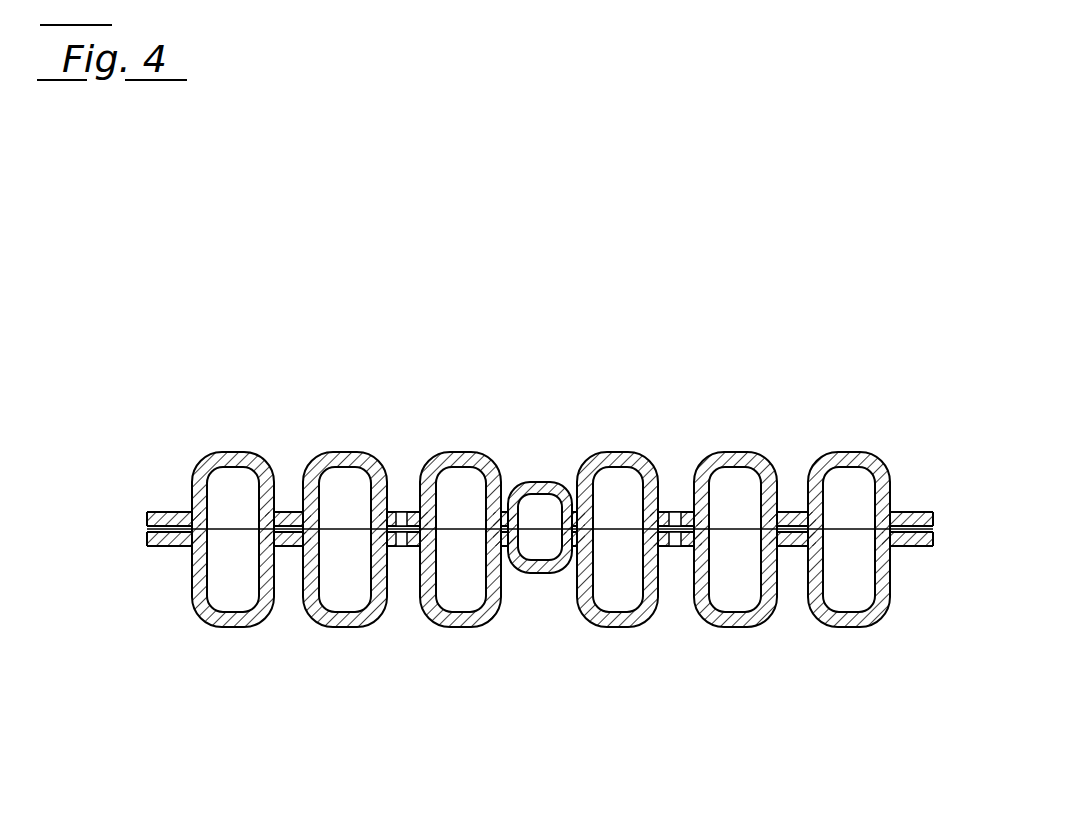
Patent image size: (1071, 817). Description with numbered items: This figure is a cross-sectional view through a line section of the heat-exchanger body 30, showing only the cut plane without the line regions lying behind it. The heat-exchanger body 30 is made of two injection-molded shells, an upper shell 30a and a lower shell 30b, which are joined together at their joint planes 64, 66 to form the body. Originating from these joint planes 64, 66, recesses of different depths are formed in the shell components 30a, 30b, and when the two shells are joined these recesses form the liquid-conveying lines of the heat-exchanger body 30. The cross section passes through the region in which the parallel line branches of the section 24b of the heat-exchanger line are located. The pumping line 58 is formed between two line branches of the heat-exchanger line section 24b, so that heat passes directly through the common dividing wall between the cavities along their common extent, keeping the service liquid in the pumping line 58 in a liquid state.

The heat-exchanger body 30 is at (494, 568).
The upper shell 30a is at (461, 452).
The lower shell 30b is at (467, 618).
The section of the heat-exchanger line 24b is at (540, 530).
The pumping line 58 is at (539, 512).
The joint plane 64 is at (834, 535).
The joint plane 66 is at (598, 523).